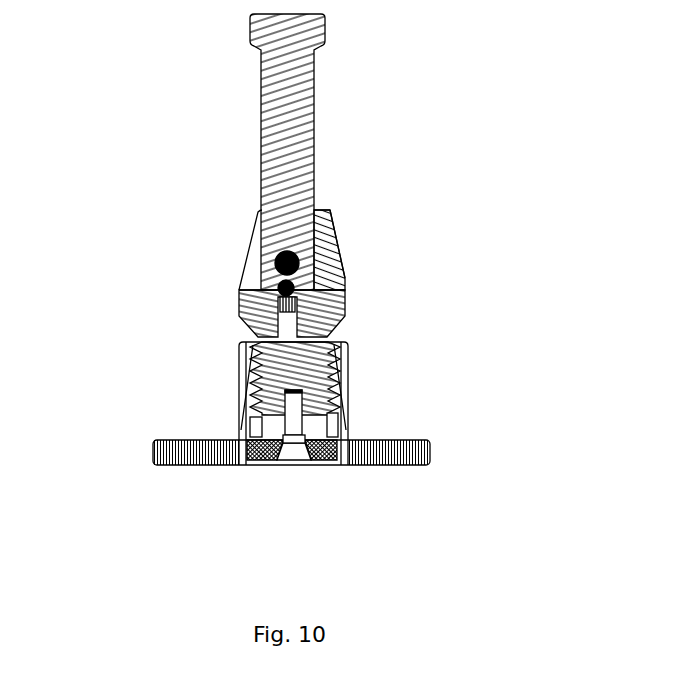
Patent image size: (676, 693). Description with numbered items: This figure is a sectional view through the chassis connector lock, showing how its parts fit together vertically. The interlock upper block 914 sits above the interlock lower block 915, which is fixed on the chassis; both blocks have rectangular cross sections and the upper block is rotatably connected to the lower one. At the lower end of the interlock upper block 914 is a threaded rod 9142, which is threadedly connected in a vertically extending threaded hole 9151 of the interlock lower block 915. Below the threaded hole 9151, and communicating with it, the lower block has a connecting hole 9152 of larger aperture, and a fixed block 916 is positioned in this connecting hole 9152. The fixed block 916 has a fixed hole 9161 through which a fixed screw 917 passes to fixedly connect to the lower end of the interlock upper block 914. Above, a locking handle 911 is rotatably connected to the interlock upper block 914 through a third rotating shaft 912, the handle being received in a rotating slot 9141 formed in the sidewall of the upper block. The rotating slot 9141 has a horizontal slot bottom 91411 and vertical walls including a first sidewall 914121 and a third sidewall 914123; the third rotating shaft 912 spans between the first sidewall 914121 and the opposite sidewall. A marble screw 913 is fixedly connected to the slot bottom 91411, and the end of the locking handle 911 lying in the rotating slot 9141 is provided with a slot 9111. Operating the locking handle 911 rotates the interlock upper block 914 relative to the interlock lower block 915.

The locking handle 911 is at (292, 116).
The third rotating shaft 912 is at (267, 262).
The marble screw 913 is at (281, 301).
The interlock upper block 914 is at (340, 310).
The slot 9111 is at (336, 248).
The rotating slot 9141 is at (338, 270).
The threaded rod 9142 is at (252, 360).
The interlock lower block 915 is at (345, 384).
The fixed block 916 is at (328, 462).
The fixed screw 917 is at (293, 465).
The threaded hole 9151 is at (252, 402).
The connecting hole 9152 is at (338, 424).
The fixed hole 9161 is at (310, 463).
The slot bottom 91411 is at (279, 288).
The first sidewall 914121 is at (278, 254).
The third sidewall 914123 is at (327, 215).